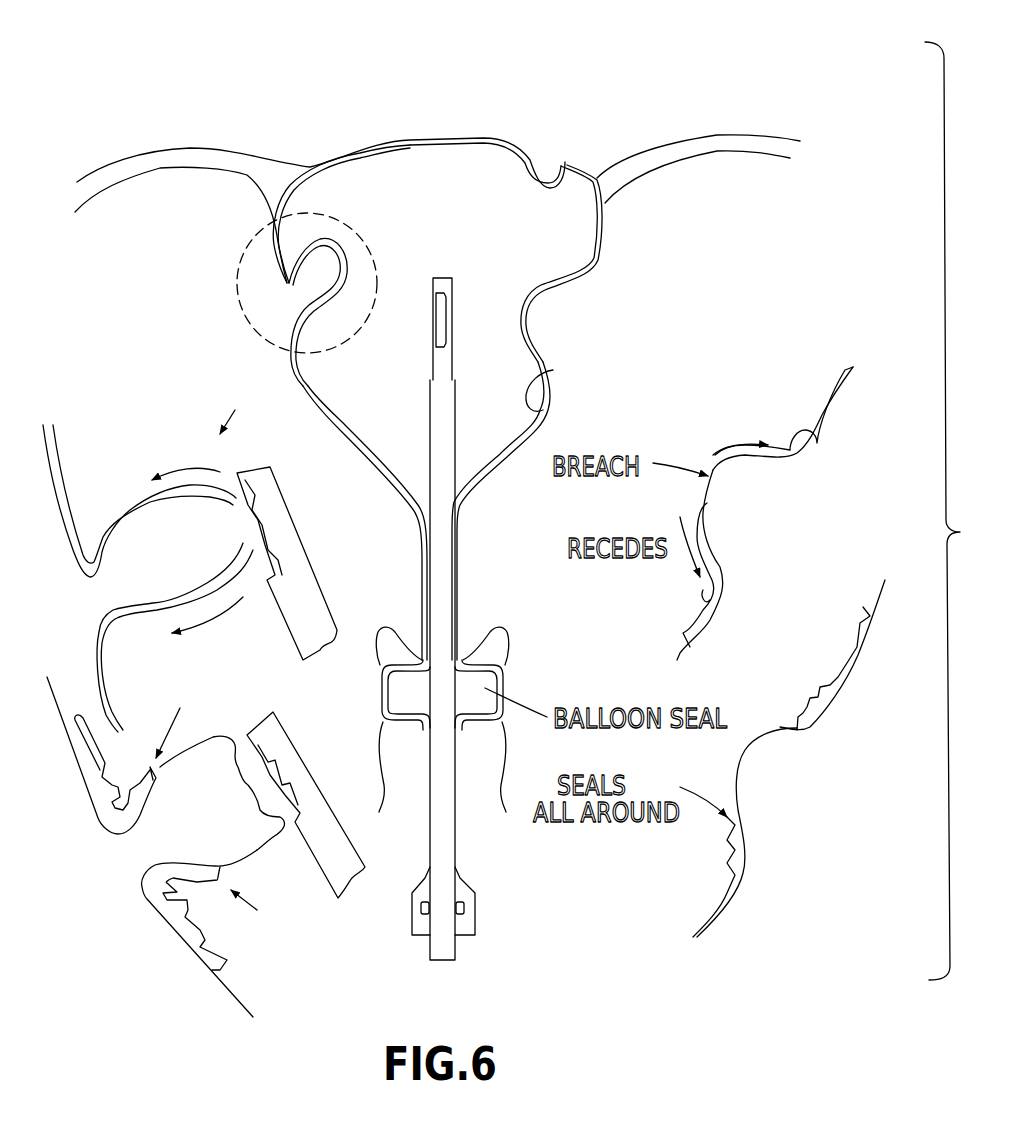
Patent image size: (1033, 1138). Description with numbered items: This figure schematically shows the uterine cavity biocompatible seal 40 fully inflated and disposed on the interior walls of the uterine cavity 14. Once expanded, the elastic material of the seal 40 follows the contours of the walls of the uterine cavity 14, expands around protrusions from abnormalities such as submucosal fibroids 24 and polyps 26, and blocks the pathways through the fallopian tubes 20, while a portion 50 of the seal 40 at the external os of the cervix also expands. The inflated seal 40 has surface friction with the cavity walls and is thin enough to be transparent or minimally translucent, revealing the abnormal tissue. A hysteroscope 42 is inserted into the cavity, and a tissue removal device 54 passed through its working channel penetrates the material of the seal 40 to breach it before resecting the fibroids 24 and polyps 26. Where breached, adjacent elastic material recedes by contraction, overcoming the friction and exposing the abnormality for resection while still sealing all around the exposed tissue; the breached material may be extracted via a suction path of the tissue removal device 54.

The uterine cavity 14 is at (415, 200).
The fallopian tubes 20 is at (648, 172).
The fibroids 24 is at (327, 262).
The polyps 26 is at (198, 547).
The uterine cavity biocompatible seal 40 is at (67, 507).
The hysteroscope 42 is at (420, 433).
The portion of the seal 50 is at (750, 737).
The tissue removal device 54 is at (460, 316).